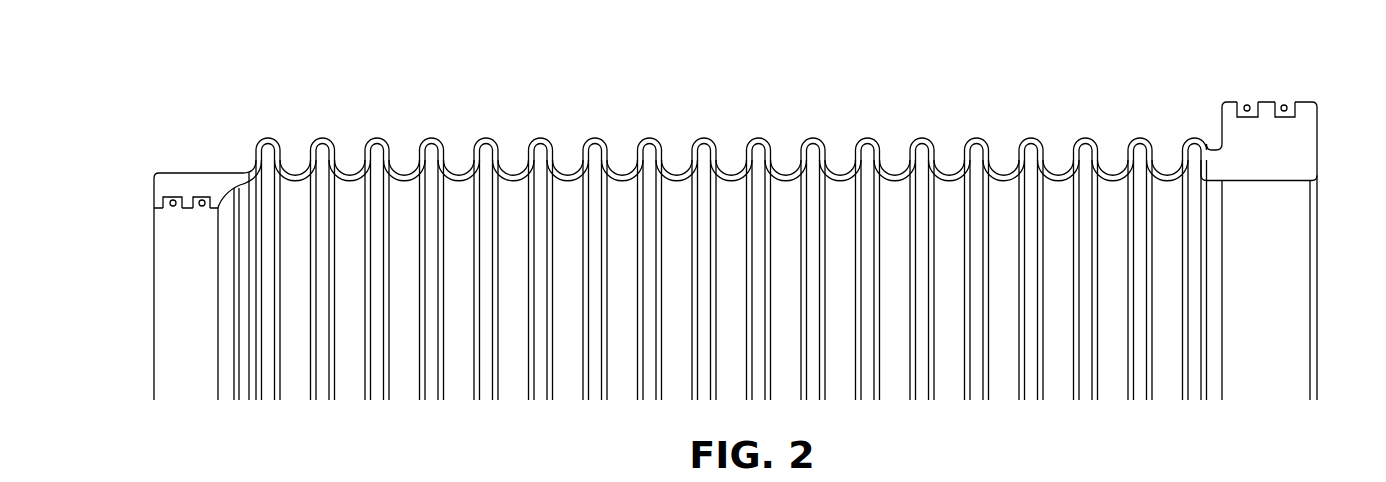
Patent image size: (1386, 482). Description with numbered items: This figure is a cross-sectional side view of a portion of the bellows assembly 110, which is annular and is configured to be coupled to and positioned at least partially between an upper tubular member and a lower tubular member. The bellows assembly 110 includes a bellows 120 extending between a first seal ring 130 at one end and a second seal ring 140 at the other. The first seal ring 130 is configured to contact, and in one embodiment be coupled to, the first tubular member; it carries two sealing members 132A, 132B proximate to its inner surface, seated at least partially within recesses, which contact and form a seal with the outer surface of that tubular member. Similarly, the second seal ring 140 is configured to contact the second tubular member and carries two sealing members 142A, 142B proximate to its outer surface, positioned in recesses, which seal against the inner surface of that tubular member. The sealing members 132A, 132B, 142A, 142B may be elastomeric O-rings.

The bellows assembly 110 is at (208, 75).
The bellows 120 is at (1207, 128).
The first seal ring 130 is at (184, 173).
The sealing member 132A is at (171, 208).
The sealing member 132B is at (201, 210).
The second seal ring 140 is at (1272, 182).
The sealing member 142A is at (1248, 103).
The sealing member 142B is at (1284, 104).